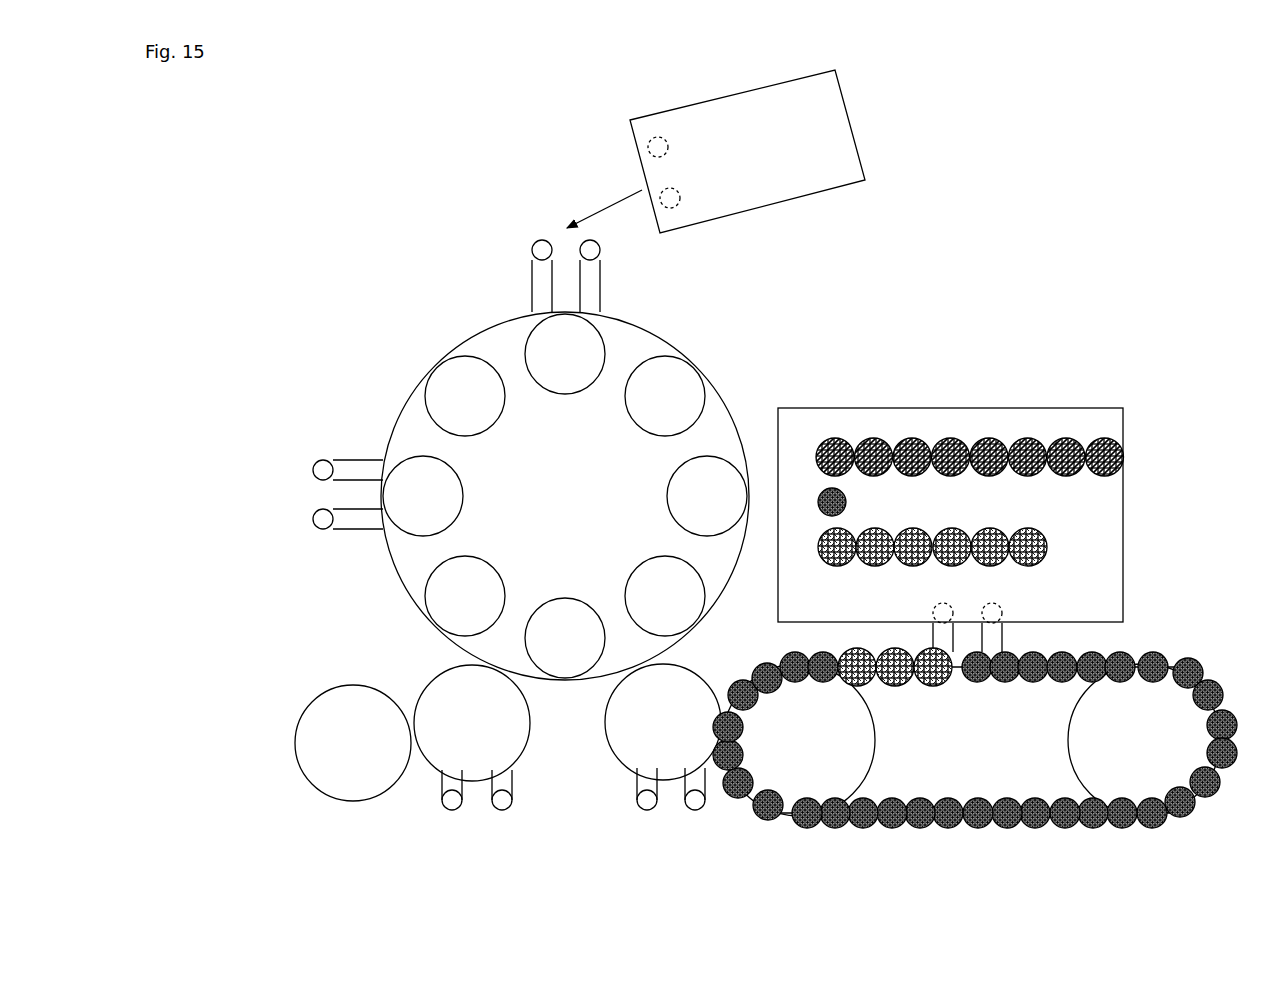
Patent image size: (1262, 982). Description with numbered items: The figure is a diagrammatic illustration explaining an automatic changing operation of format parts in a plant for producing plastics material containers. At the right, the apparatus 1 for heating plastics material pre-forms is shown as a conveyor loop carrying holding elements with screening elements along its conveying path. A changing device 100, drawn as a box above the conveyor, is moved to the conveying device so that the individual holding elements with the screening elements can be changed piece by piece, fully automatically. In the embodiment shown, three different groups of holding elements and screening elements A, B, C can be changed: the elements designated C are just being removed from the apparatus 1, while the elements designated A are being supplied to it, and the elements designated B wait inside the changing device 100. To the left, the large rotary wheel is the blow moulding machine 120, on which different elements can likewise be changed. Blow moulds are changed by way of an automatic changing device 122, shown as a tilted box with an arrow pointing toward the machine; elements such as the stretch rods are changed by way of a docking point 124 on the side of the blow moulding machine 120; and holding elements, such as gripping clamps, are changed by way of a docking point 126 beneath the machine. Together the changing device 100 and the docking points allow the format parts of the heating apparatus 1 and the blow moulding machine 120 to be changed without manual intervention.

The apparatus 1 is at (1162, 628).
The changing device 100 is at (1010, 453).
The blow moulding machine 120 is at (731, 377).
The automatic changing device 122 is at (716, 151).
The docking point 124 is at (343, 447).
The docking point 126 is at (478, 795).
The group of holding elements and screening elements A is at (1032, 530).
The group of holding elements and screening elements B is at (1106, 445).
The group of holding elements and screening elements C is at (837, 490).